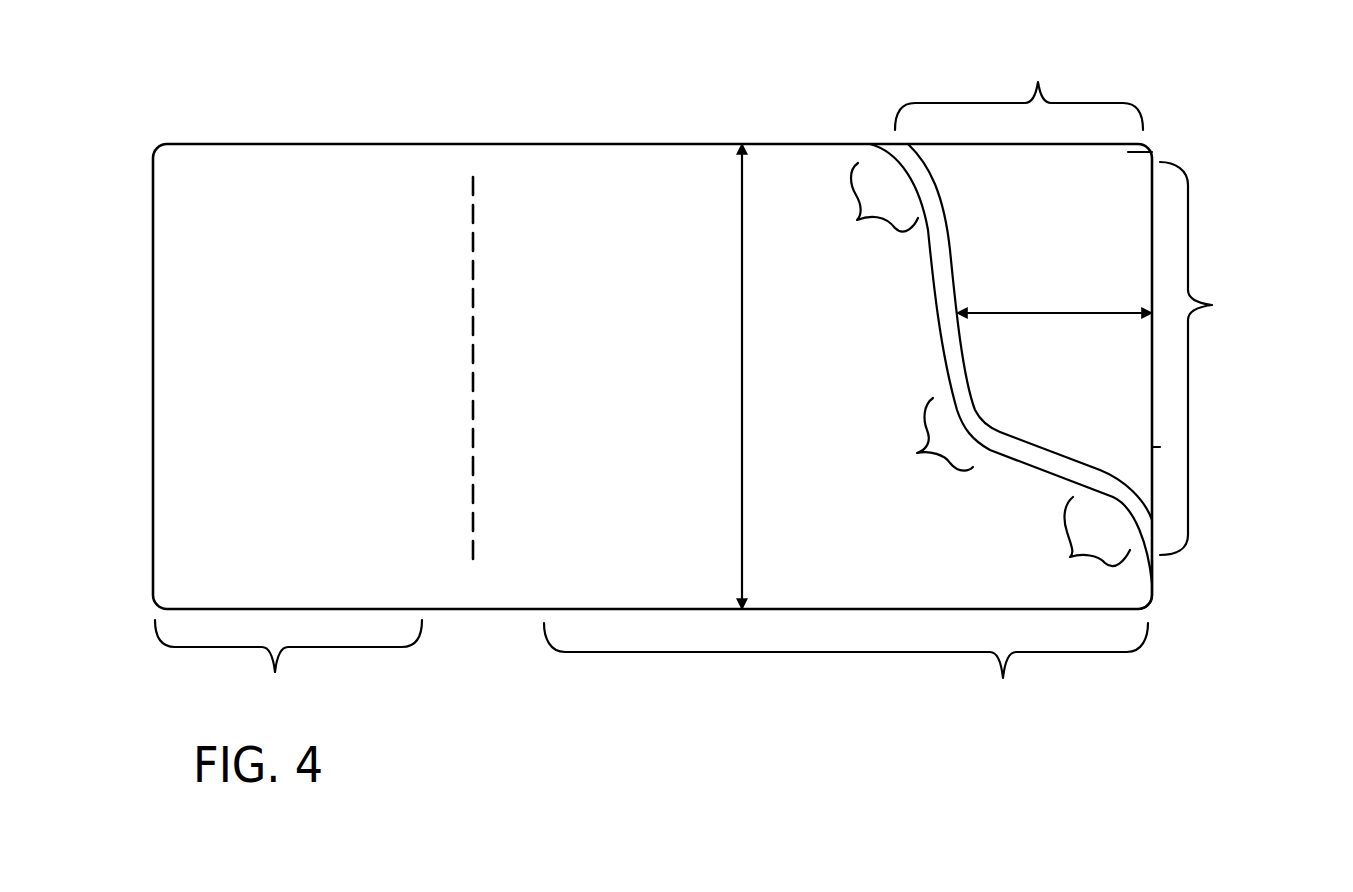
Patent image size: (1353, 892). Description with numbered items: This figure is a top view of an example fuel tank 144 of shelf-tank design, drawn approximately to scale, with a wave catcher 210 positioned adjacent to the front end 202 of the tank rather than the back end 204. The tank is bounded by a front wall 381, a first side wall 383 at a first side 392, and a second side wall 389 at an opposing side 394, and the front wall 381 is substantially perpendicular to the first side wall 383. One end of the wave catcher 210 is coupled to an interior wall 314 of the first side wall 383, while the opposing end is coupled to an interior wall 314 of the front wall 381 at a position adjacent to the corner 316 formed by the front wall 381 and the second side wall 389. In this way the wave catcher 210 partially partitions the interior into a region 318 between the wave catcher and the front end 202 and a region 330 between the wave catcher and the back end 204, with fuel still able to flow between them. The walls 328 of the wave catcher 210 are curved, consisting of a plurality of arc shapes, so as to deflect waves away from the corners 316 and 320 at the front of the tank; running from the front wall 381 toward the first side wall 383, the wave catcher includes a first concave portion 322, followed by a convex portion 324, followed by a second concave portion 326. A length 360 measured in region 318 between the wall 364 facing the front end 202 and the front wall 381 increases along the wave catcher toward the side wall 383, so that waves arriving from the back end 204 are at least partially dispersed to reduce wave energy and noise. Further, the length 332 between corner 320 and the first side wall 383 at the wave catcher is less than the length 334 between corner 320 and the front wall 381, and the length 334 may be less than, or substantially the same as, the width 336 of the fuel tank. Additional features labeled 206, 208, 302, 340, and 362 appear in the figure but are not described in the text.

The fuel tank 144 is at (420, 144).
The front end 202 is at (1245, 412).
The back end 204 is at (138, 308).
The front panel 206 is at (846, 667).
The back panel 208 is at (288, 664).
The wave catcher 210 is at (933, 296).
The fold line 302 is at (473, 630).
The interior walls 314 is at (618, 144).
The corner 316 is at (1115, 580).
The region 318 is at (1047, 313).
The corner 320 is at (1152, 152).
The first concave portion 322 is at (1080, 537).
The convex portion 324 is at (925, 435).
The second concave portion 326 is at (869, 204).
The walls of wave catcher 328 is at (937, 222).
The region 330 is at (570, 440).
The length 332 is at (1019, 92).
The length 334 is at (1205, 358).
The width 336 is at (742, 330).
The strip channel 340 is at (957, 355).
The length 360 is at (1083, 313).
The lower strip section 362 is at (1020, 467).
The wall 364 is at (973, 400).
The front wall 381 is at (1153, 447).
The first side wall 383 is at (843, 144).
The second side wall 389 is at (970, 609).
The first side 392 is at (697, 127).
The side 394 is at (653, 623).